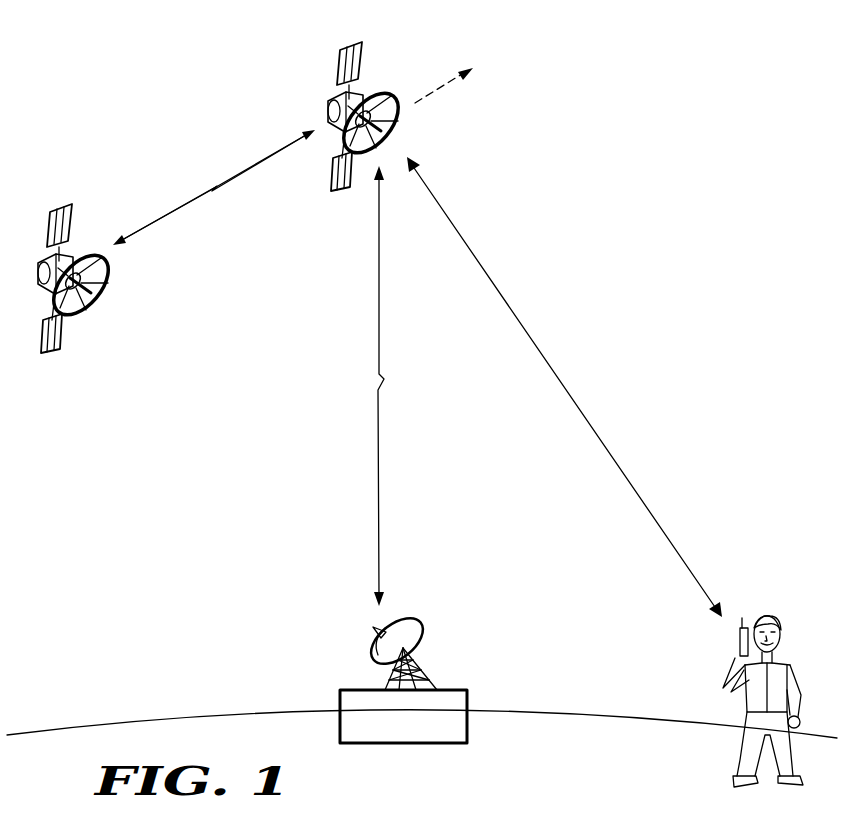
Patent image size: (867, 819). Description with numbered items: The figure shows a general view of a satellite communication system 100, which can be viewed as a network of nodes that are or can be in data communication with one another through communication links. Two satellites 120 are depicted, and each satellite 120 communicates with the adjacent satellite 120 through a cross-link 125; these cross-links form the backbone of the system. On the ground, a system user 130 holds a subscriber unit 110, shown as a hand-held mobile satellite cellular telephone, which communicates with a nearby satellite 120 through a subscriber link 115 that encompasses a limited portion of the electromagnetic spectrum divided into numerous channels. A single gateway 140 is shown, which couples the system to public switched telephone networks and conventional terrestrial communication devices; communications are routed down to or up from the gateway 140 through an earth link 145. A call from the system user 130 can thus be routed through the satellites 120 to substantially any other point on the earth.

The satellite communication system 100 is at (579, 766).
The subscriber unit 110 is at (738, 648).
The subscriber link 115 is at (521, 330).
The satellite 120 is at (361, 66).
The cross-link 125 is at (237, 168).
The system user 130 is at (792, 668).
The gateway 140 is at (346, 690).
The earth link 145 is at (378, 487).